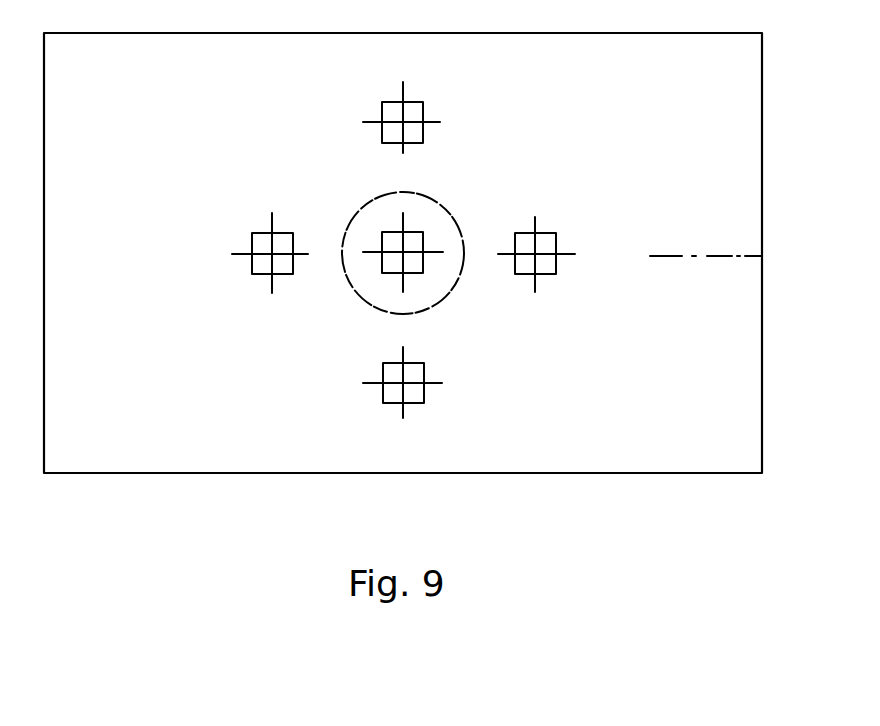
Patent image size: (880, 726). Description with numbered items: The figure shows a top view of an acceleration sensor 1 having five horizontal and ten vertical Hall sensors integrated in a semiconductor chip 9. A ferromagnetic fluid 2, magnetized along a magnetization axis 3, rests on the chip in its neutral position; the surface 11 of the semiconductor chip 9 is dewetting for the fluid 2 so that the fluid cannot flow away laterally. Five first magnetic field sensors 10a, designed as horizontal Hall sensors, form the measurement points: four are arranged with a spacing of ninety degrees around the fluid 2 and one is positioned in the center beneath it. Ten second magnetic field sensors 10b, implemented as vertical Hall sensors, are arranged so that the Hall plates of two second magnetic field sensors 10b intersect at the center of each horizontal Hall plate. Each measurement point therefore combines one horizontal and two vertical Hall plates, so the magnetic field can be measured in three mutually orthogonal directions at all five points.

The acceleration sensor 1 is at (565, 498).
The ferromagnetic fluid 2 is at (364, 216).
The magnetization axis 3 is at (715, 258).
The semiconductor chip 9 is at (146, 460).
The first magnetic field sensor 10a is at (417, 112).
The second magnetic field sensor 10b is at (402, 90).
The surface 11 is at (657, 457).